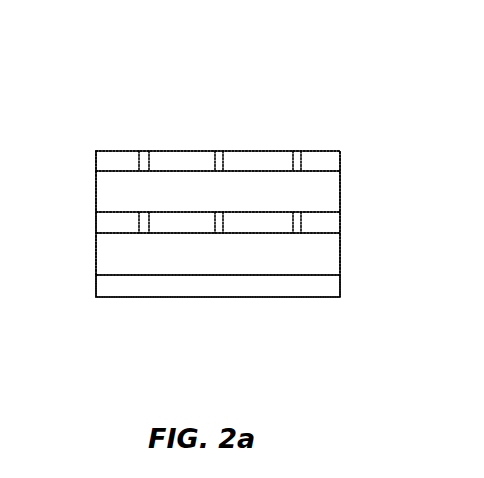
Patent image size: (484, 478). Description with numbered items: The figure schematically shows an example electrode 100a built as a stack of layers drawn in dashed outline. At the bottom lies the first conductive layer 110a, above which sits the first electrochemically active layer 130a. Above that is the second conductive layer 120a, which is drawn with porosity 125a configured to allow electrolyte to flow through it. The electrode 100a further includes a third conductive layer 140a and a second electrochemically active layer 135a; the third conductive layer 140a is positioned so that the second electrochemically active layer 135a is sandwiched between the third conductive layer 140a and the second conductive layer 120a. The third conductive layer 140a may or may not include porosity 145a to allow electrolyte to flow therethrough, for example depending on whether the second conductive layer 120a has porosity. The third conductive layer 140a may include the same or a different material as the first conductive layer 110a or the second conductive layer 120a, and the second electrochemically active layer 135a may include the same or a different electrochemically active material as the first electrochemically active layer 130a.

The electrode 100a is at (300, 70).
The first conductive layer 110a is at (323, 285).
The second conductive layer 120a is at (325, 220).
The porosity 125a is at (142, 228).
The first electrochemically active layer 130a is at (325, 262).
The second electrochemically active layer 135a is at (325, 188).
The third conductive layer 140a is at (340, 160).
The porosity 145a is at (143, 157).